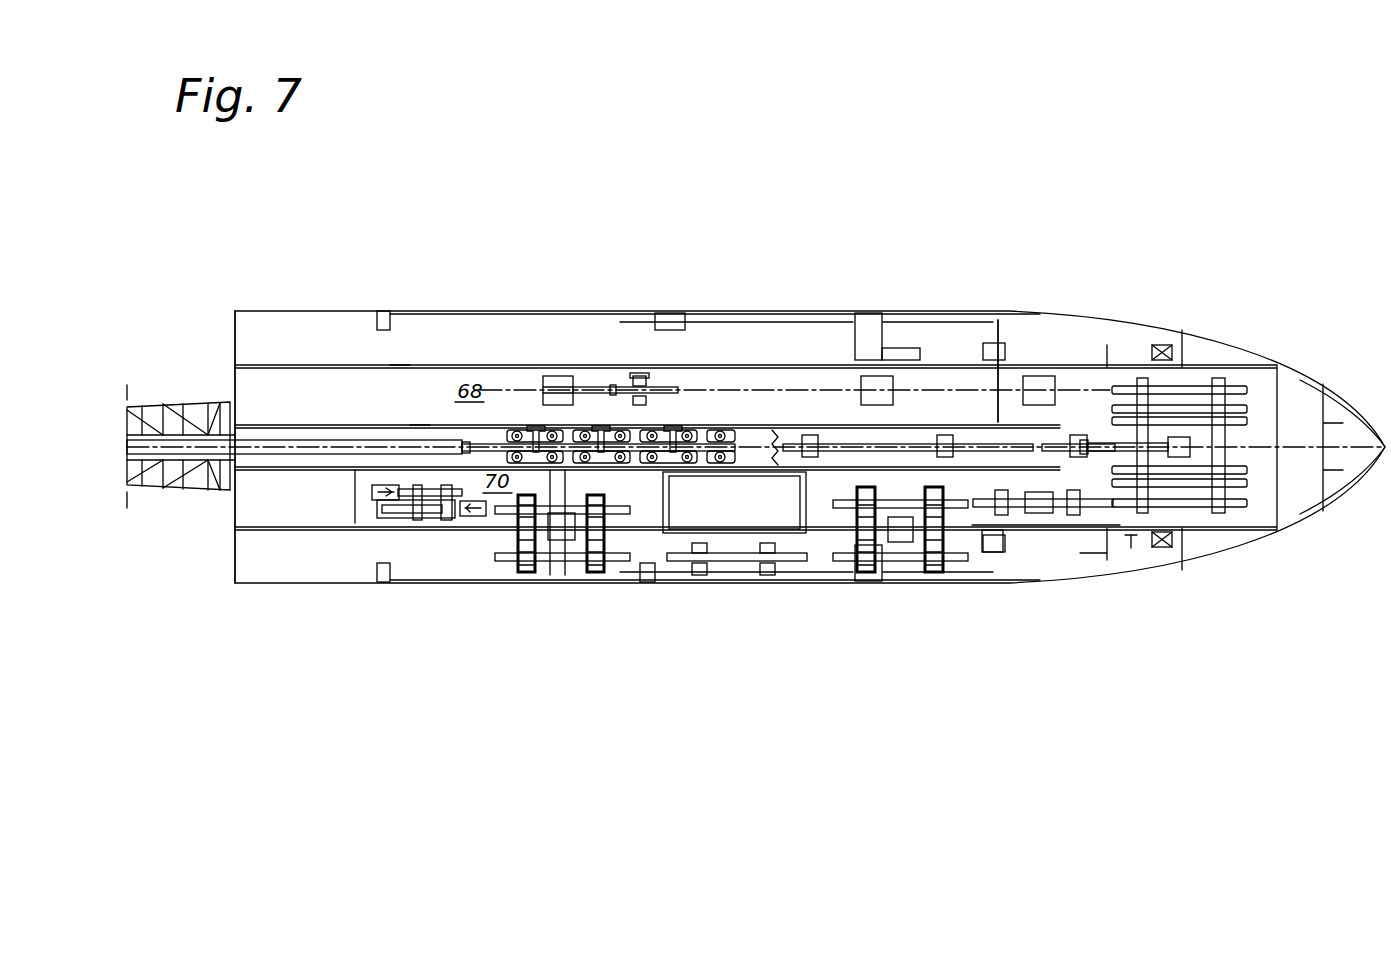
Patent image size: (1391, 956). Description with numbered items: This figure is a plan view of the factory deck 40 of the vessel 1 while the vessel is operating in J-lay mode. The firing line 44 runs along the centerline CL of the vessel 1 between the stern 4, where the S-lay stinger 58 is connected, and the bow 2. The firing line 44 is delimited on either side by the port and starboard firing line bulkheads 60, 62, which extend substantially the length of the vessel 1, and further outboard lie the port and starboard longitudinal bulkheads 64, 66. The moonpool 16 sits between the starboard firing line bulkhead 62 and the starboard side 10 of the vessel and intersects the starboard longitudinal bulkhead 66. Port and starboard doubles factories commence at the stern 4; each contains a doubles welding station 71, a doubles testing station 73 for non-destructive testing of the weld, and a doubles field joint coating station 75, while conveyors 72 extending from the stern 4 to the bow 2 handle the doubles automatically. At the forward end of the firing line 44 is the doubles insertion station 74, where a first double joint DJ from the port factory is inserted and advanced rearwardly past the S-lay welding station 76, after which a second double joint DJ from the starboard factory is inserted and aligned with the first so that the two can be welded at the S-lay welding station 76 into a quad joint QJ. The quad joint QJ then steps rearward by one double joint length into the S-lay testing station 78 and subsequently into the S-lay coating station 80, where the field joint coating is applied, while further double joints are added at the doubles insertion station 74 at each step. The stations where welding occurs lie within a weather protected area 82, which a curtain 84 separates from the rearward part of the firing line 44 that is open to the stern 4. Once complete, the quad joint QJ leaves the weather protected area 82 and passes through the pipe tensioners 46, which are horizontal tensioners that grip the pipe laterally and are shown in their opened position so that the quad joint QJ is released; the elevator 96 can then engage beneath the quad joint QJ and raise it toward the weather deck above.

The vessel 1 is at (1193, 218).
The bow 2 is at (1347, 497).
The stern 4 is at (233, 548).
The starboard side 10 is at (932, 583).
The moonpool 16 is at (747, 500).
The factory deck 40 is at (1140, 378).
The firing line 44 is at (640, 373).
The pipe tensioners 46 is at (613, 444).
The S-lay stinger 58 is at (182, 496).
The port firing line bulkhead 60 is at (420, 423).
The starboard firing line bulkhead 62 is at (355, 470).
The port longitudinal bulkhead 64 is at (400, 363).
The starboard longitudinal bulkhead 66 is at (417, 519).
The doubles welding station 71 is at (567, 378).
The conveyors 72 is at (642, 436).
The doubles testing station 73 is at (912, 443).
The doubles insertion station 74 is at (1208, 462).
The doubles field joint coating station 75 is at (1038, 376).
The S-lay welding station 76 is at (1080, 435).
The S-lay testing station 78 is at (986, 405).
The S-lay coating station 80 is at (873, 376).
The weather protected area 82 is at (948, 435).
The curtain 84 is at (531, 396).
The elevator 96 is at (528, 426).